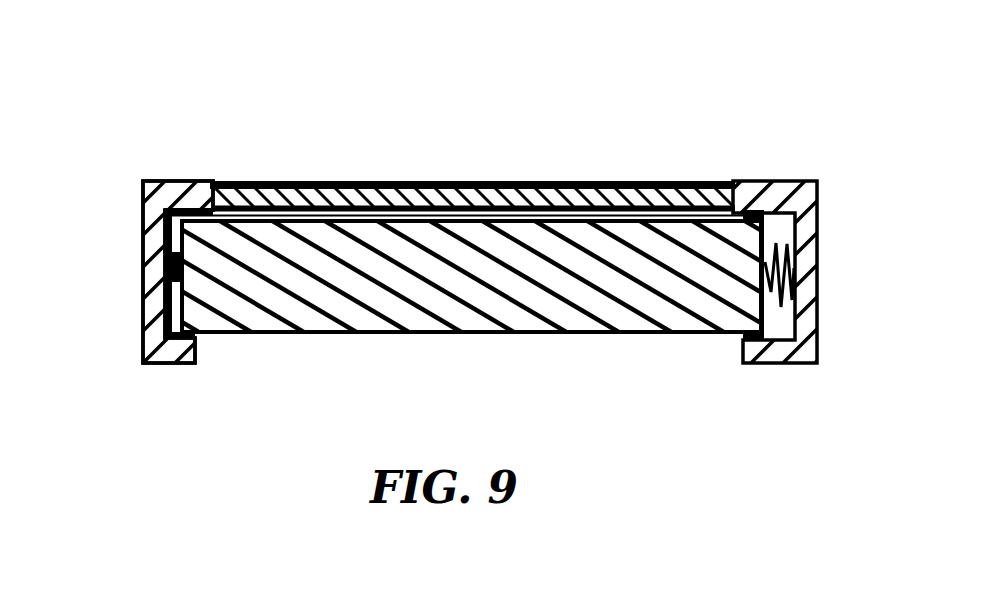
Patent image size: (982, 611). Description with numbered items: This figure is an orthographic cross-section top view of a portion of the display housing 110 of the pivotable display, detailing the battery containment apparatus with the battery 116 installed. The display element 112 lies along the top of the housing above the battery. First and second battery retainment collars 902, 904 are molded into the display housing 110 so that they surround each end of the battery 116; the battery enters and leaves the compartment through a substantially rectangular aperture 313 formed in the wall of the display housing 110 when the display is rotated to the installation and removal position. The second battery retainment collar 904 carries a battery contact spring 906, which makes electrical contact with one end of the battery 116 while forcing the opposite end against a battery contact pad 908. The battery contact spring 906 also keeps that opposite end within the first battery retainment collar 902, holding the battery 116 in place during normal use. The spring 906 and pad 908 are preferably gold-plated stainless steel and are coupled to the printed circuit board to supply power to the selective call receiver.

The display housing 110 is at (142, 327).
The display element 112 is at (346, 182).
The battery 116 is at (517, 336).
The substantially rectangular aperture 313 is at (196, 345).
The first battery retainment collar 902 is at (142, 196).
The second battery retainment collar 904 is at (743, 183).
The battery contact spring 906 is at (777, 243).
The battery contact pad 908 is at (142, 267).